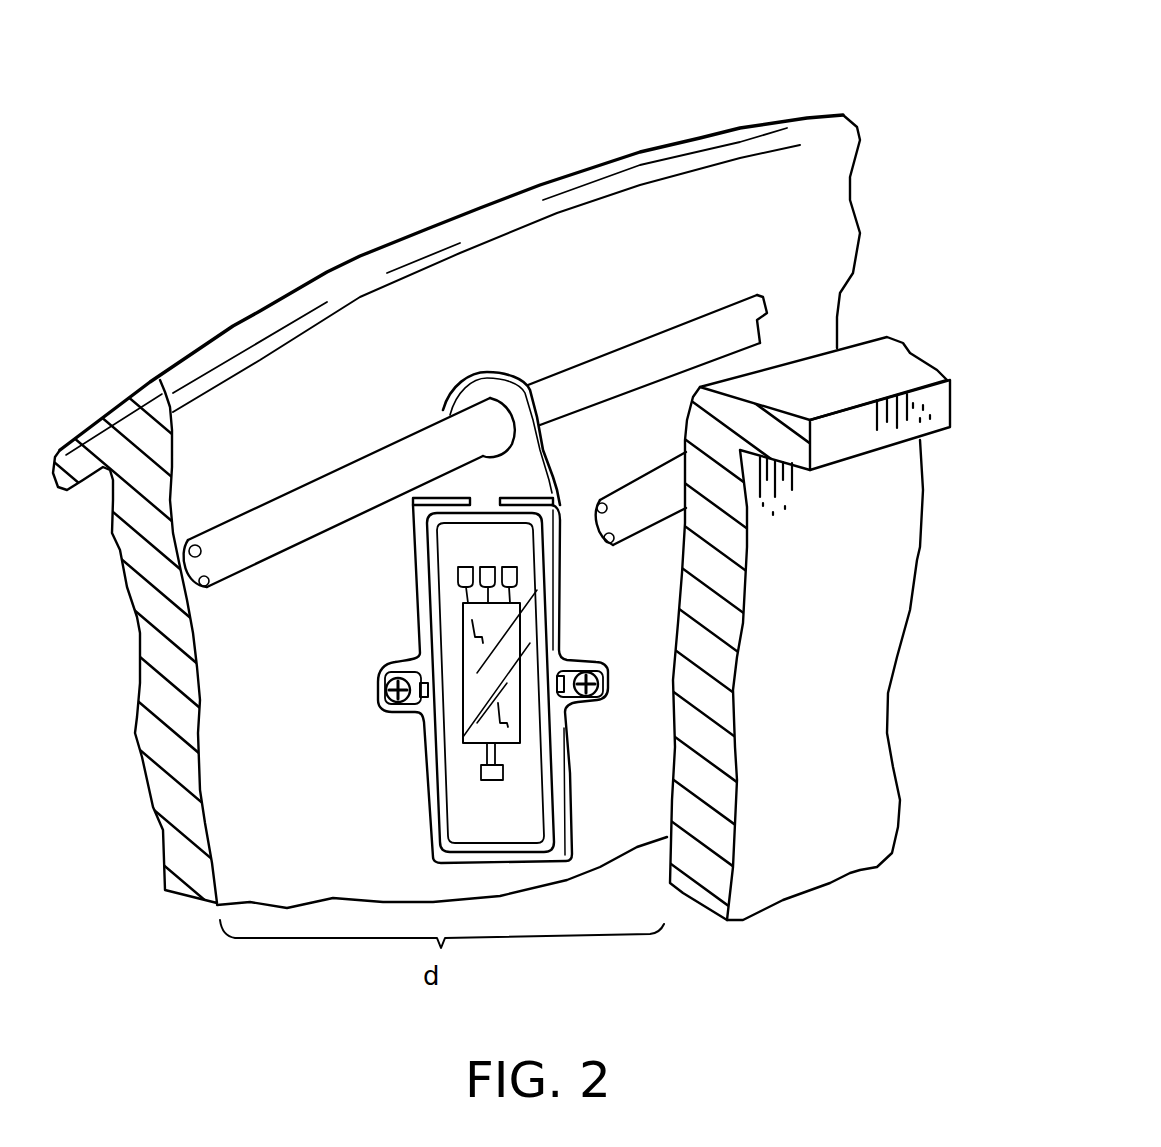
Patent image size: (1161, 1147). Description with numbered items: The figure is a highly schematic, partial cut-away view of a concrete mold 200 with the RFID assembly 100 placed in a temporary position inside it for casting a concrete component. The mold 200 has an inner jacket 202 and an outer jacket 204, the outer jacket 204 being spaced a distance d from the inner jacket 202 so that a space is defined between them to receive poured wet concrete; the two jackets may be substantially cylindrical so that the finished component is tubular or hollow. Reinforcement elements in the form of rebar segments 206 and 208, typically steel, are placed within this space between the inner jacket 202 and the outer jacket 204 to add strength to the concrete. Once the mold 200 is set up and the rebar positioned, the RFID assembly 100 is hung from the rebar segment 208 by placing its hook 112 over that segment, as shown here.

The mold 200 is at (820, 95).
The inner jacket 202 is at (893, 337).
The outer jacket 204 is at (440, 212).
The rebar segment 206 is at (641, 533).
The rebar segment 208 is at (654, 332).
The hook 112 is at (492, 370).
The RFID assembly 100 is at (378, 604).